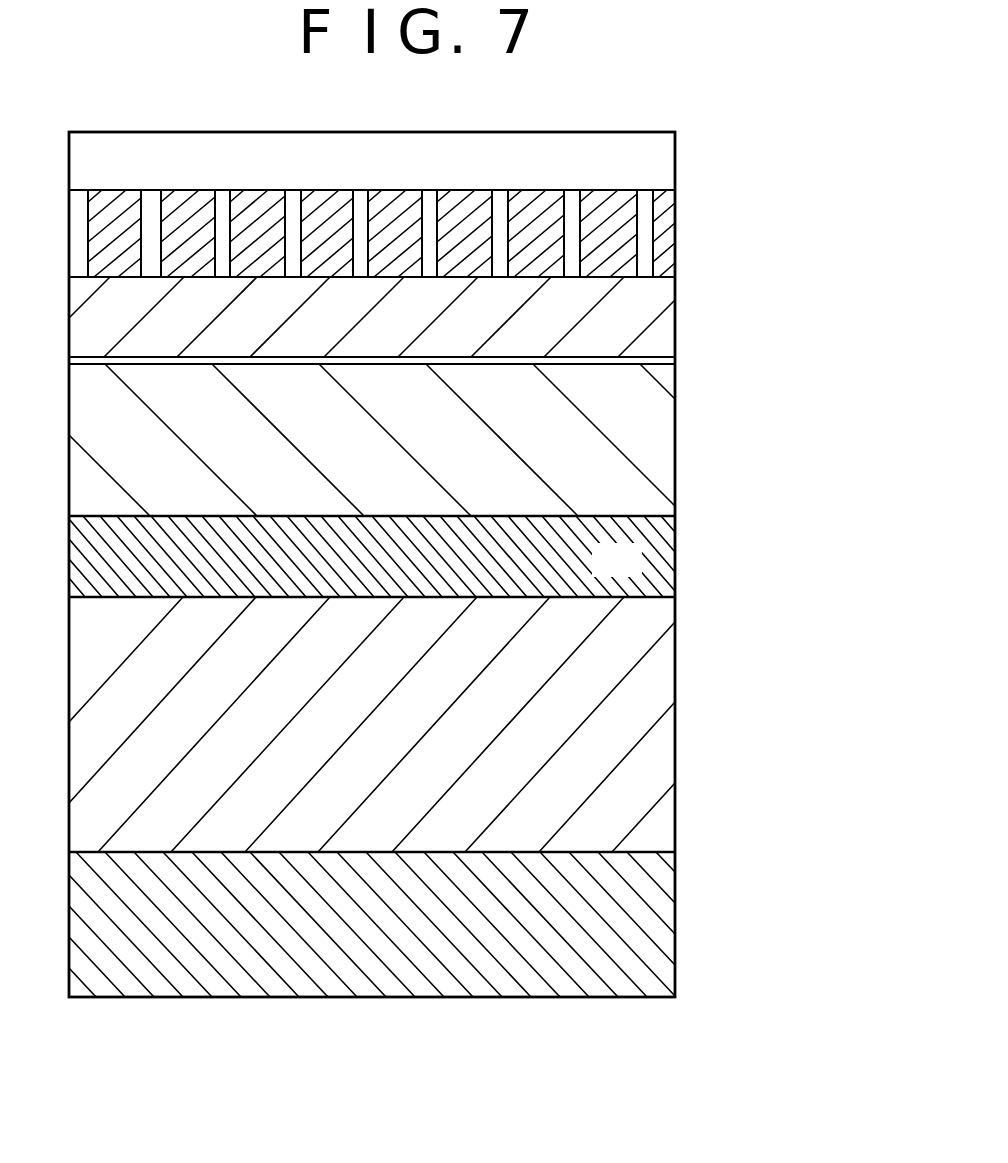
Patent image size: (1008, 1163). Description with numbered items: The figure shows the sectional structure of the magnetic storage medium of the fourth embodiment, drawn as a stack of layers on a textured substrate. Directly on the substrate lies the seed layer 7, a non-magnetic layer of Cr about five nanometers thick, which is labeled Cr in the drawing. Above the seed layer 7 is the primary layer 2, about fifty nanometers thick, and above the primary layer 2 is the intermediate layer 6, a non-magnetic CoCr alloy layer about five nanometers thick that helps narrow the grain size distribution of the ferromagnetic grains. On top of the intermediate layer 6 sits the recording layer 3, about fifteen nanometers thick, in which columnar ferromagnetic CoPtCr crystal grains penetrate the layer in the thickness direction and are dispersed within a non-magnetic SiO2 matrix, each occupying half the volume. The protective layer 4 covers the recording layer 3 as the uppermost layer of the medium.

The protective layer 4 is at (832, 128).
The recording layer 3 is at (832, 192).
The intermediate layer 6 is at (832, 282).
The primary layer 2 is at (832, 377).
The seed layer 7 is at (832, 523).